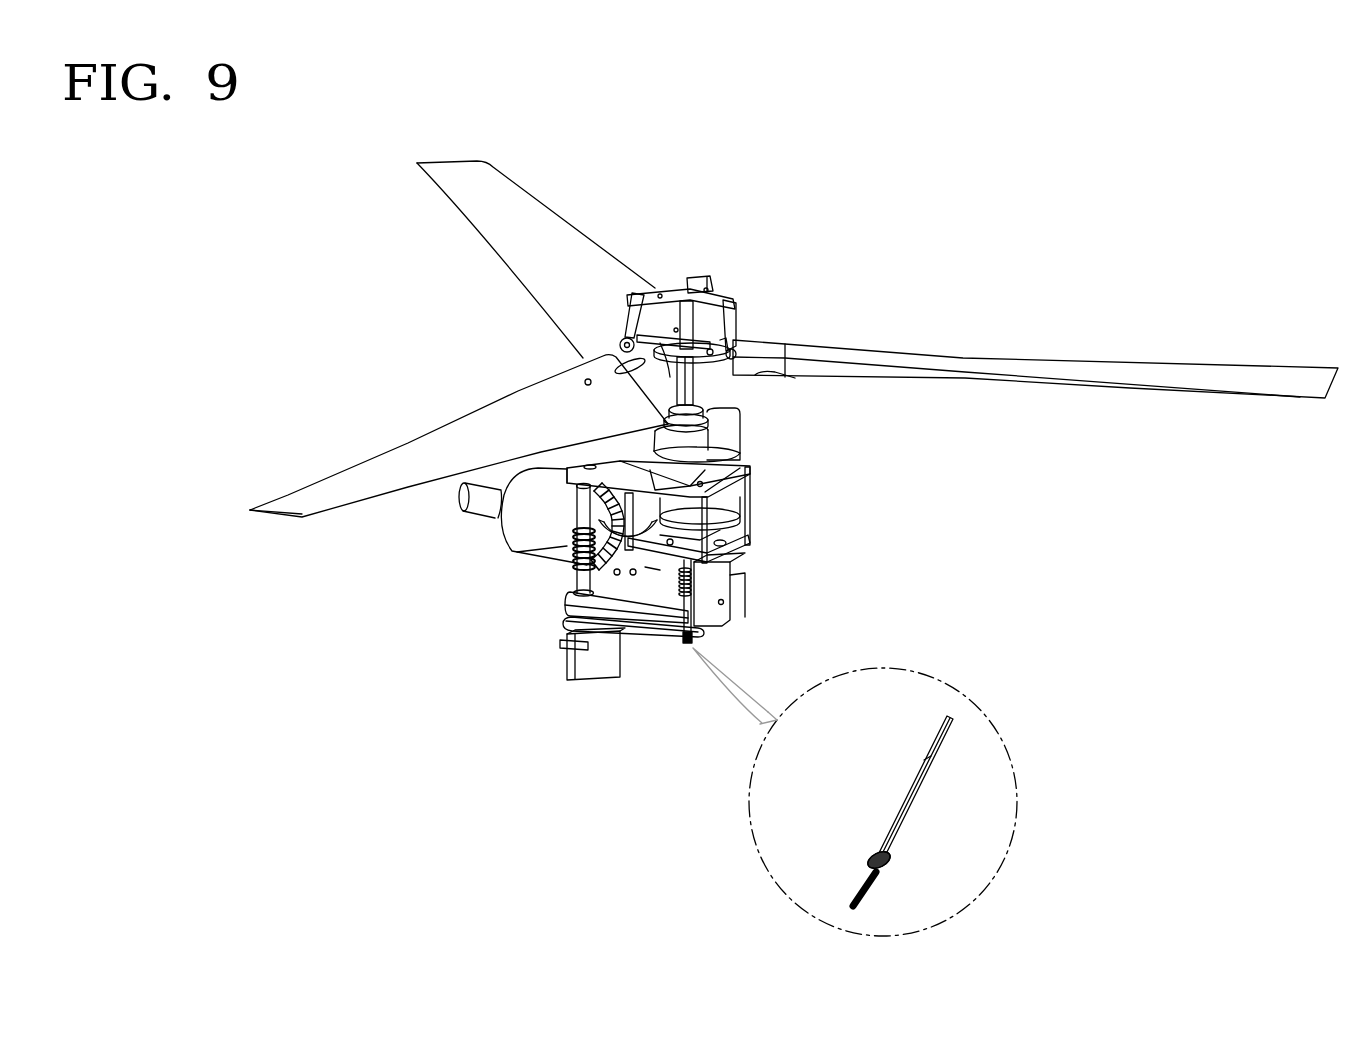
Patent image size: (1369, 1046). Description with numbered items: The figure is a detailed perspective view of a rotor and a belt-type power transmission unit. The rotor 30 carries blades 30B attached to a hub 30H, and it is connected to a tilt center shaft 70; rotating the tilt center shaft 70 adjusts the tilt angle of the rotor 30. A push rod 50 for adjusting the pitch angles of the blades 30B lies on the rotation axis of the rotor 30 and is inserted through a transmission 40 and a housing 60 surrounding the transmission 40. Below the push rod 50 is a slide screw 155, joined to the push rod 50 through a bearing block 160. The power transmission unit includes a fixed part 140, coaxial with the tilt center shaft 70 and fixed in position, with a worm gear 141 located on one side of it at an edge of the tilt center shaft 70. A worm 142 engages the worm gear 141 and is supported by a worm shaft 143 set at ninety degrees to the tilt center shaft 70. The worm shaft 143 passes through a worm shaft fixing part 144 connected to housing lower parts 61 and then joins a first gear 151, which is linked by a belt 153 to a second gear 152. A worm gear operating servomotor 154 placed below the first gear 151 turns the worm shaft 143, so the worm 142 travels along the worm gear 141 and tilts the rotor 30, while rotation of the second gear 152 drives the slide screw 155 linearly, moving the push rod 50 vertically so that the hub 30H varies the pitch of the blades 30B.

The rotor 30 is at (893, 247).
The blades 30B is at (882, 358).
The hub 30H is at (730, 297).
The push rod 50 is at (664, 284).
The housing 60 is at (723, 433).
The transmission 40 is at (728, 506).
The tilt center shaft 70 is at (471, 498).
The fixed part 140 is at (515, 487).
The worm gear 141 is at (601, 498).
The worm 142 is at (587, 544).
The worm shaft 143 is at (580, 575).
The worm shaft fixing part 144 is at (598, 607).
The first gear 151 is at (570, 628).
The second gear 152 is at (718, 631).
The belt 153 is at (652, 626).
The worm gear operating servomotor 154 is at (565, 681).
The slide screw 155 is at (688, 648).
The bearing block 160 is at (868, 854).
The housing lower parts 61 is at (722, 581).